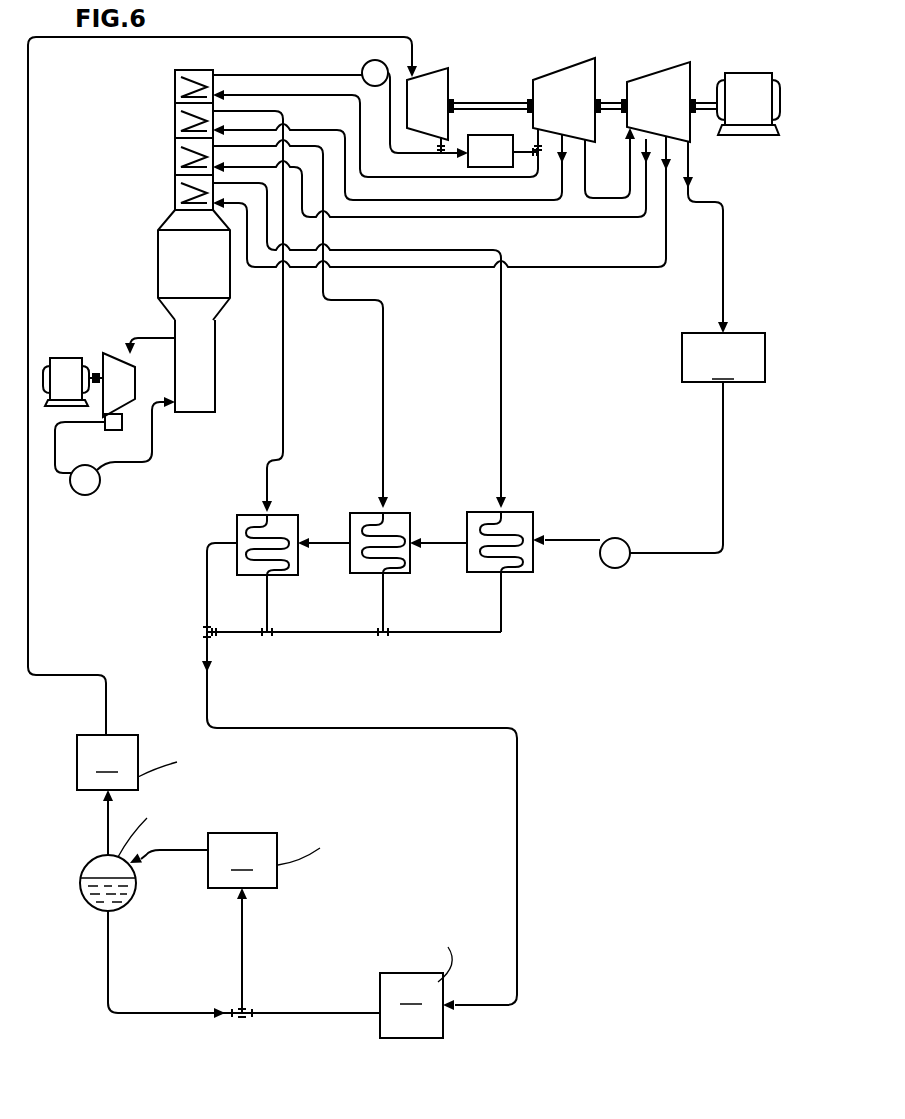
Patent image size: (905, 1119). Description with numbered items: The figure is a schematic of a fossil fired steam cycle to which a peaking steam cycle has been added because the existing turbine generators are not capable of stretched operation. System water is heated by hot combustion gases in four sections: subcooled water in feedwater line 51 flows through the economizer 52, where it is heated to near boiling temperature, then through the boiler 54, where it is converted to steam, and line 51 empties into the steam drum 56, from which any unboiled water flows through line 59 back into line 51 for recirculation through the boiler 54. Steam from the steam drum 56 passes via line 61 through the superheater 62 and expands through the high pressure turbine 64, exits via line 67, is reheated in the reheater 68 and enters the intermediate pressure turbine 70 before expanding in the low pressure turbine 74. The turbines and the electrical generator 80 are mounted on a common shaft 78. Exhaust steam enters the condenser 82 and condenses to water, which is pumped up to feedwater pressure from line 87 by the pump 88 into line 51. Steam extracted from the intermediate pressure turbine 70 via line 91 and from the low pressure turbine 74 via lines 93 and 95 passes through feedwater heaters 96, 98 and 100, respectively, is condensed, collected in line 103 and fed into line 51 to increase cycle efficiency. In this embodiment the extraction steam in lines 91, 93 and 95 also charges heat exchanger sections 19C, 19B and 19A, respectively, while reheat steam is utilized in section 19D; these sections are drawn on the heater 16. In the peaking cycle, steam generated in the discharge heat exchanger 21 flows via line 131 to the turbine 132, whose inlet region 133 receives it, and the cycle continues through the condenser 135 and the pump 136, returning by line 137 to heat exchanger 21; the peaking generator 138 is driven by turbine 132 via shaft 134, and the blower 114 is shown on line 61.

The furnace 16 is at (180, 247).
The charging heat exchanger section 19A is at (180, 197).
The charging heat exchanger section 19B is at (180, 161).
The charging heat exchanger section 19C is at (180, 124).
The charging heat exchanger section 19D is at (180, 87).
The discharge heat exchanger 21 is at (210, 348).
The feedwater line 51 is at (577, 542).
The economizer 52 is at (378, 987).
The boiler 54 is at (254, 923).
The steam drum 56 is at (93, 872).
The line 59 is at (112, 980).
The line 61 is at (307, 40).
The superheater 62 is at (190, 762).
The high pressure turbine 64 is at (433, 78).
The line 67 is at (453, 158).
The reheater 68 is at (503, 143).
The intermediate pressure turbine 70 is at (565, 82).
The low pressure turbine 74 is at (645, 87).
The common shaft 78 is at (705, 98).
The electrical generator 80 is at (747, 92).
The condenser 82 is at (723, 357).
The line 87 is at (723, 430).
The pump 88 is at (620, 565).
The extraction line 91 is at (288, 378).
The extraction line 93 is at (385, 378).
The extraction line 95 is at (503, 373).
The feedwater heater 96 is at (280, 520).
The feedwater heater 98 is at (400, 518).
The feedwater heater 100 is at (520, 518).
The line 103 is at (417, 633).
The blower 114 is at (377, 60).
The line 131 is at (158, 333).
The turbine 132 is at (115, 357).
The compressor inlet 133 is at (107, 407).
The shaft 134 is at (97, 390).
The condenser 135 is at (112, 430).
The pump 136 is at (90, 490).
The return line 137 is at (152, 452).
The peaking generator 138 is at (58, 363).